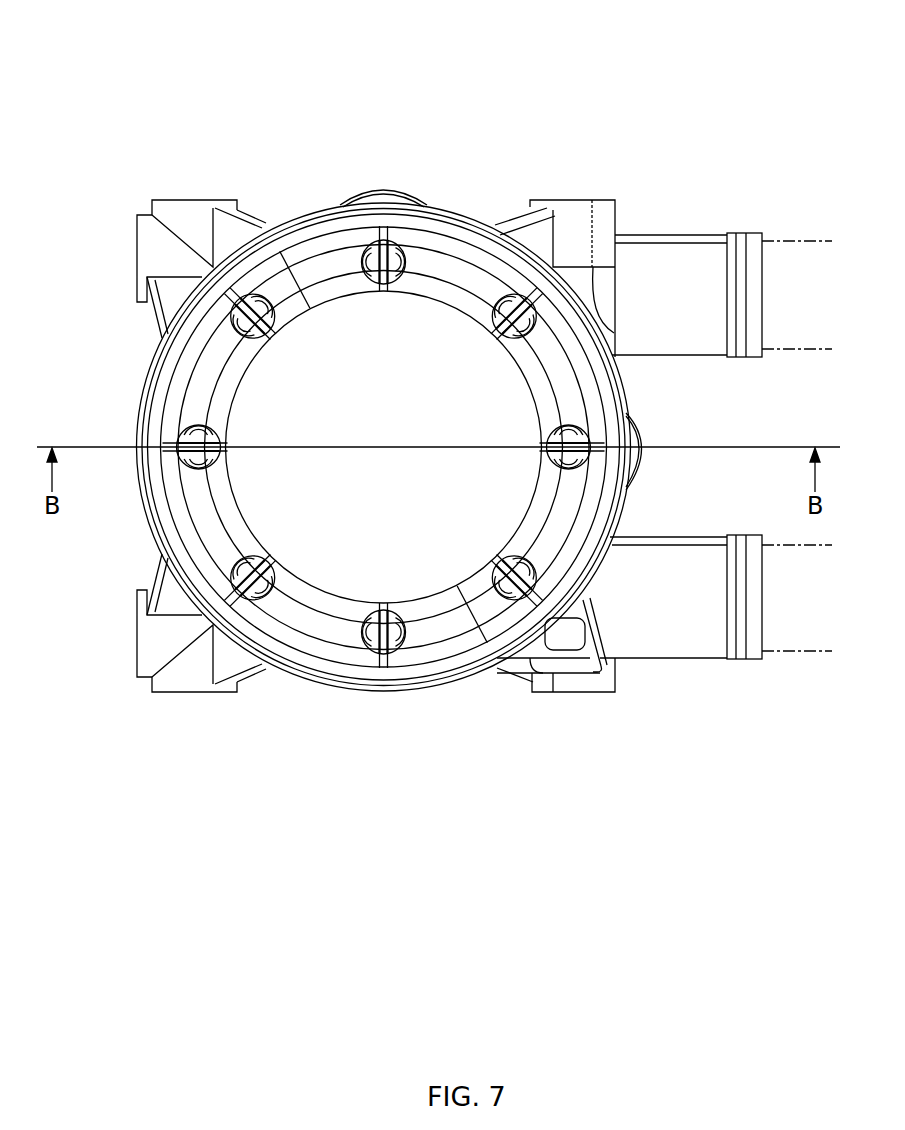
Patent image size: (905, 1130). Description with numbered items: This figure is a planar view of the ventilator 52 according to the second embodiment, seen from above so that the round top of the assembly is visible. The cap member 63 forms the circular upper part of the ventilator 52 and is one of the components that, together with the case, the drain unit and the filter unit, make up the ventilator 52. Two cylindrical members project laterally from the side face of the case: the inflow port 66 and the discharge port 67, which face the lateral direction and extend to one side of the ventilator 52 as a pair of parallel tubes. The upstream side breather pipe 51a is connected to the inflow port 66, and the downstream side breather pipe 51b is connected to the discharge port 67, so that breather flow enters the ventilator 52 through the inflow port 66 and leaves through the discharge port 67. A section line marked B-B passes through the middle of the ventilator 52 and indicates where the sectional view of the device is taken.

The ventilator 52 is at (375, 135).
The cap member 63 is at (449, 207).
The inflow port 66 is at (672, 242).
The discharge port 67 is at (673, 660).
The upstream side breather pipe 51a is at (794, 241).
The downstream side breather pipe 51b is at (793, 656).